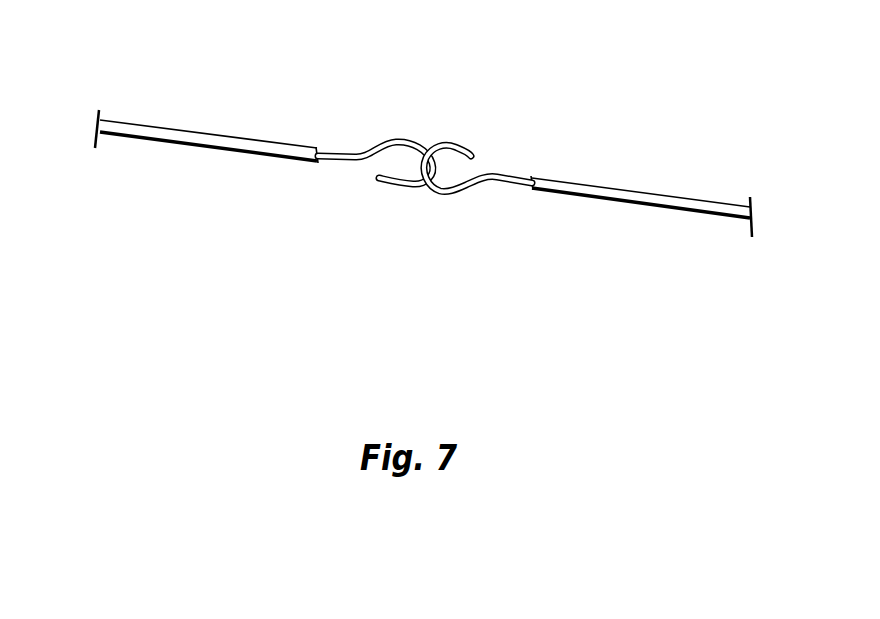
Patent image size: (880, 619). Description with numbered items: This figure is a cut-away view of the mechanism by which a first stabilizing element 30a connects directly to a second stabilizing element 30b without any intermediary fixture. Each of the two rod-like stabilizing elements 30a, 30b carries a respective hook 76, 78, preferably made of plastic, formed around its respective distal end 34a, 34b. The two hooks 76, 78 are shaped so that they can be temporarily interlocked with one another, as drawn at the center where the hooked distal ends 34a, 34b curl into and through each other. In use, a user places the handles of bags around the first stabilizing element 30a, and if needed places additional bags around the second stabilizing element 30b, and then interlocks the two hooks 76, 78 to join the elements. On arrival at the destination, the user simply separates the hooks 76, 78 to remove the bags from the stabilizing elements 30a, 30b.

The stabilizing element 30a is at (623, 193).
The stabilizing element 30b is at (138, 120).
The distal end 34a is at (477, 141).
The distal end 34b is at (357, 183).
The hook 76 is at (518, 167).
The hook 78 is at (310, 168).